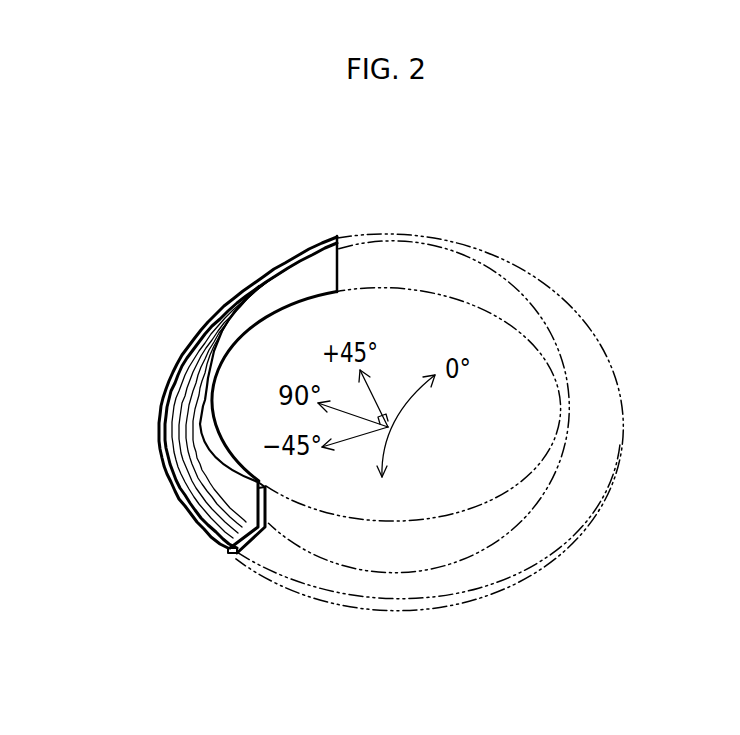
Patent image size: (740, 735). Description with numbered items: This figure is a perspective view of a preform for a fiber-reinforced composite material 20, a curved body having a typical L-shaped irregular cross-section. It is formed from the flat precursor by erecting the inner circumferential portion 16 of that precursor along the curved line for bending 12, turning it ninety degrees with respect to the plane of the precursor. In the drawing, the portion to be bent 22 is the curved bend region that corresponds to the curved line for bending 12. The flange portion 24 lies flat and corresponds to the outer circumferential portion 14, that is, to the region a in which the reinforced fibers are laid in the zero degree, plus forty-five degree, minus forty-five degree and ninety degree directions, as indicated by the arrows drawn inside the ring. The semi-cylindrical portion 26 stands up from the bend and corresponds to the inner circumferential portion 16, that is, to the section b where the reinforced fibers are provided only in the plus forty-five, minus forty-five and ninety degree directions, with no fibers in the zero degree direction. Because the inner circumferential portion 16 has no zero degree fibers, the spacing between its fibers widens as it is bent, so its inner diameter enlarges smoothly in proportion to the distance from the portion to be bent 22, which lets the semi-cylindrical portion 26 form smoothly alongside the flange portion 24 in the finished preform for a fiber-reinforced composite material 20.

The preform for a fiber-reinforced composite material 20 is at (282, 235).
The portion to be bent 22 is at (240, 506).
The curved line for bending 12 is at (417, 422).
The flange portion 24 is at (197, 503).
The outer circumferential portion 14 is at (189, 410).
The semi-cylindrical portion 26 is at (315, 283).
The inner circumferential portion 16 is at (293, 392).
The region a is at (176, 426).
The section b is at (268, 294).